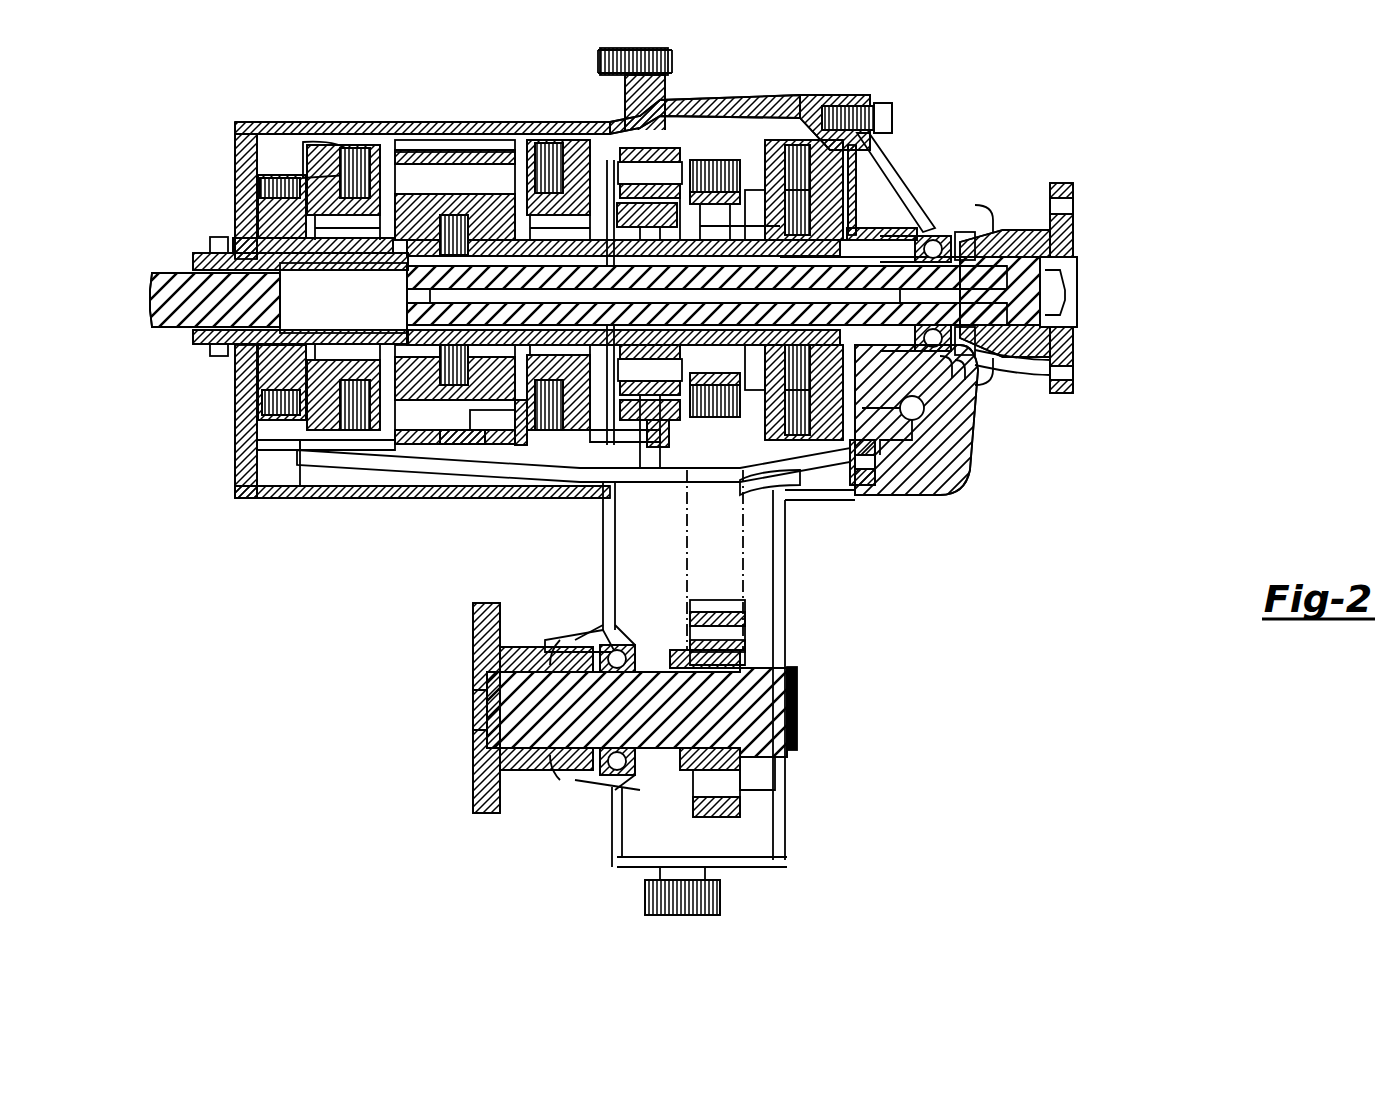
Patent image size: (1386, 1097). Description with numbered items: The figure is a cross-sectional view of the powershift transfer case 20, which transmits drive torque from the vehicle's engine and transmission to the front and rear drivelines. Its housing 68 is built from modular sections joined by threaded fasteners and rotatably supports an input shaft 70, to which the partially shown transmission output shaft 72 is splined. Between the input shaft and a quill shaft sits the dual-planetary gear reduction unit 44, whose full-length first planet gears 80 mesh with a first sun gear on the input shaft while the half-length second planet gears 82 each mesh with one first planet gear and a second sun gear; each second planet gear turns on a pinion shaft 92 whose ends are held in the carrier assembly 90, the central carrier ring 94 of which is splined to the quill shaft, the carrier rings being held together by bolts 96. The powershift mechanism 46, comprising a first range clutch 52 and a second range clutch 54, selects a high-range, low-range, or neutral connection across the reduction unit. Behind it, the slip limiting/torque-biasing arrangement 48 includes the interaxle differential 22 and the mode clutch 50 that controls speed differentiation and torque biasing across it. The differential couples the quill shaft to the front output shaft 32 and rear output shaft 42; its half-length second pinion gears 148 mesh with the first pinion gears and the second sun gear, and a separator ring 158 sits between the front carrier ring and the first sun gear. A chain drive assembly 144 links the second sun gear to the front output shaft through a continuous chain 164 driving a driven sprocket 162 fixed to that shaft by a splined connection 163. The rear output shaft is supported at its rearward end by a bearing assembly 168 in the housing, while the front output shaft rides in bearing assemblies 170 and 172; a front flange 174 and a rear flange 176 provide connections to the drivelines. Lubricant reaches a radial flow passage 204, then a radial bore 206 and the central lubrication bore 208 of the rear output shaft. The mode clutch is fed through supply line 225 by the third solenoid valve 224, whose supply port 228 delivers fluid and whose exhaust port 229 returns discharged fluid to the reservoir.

The transfer case 20 is at (920, 100).
The interaxle differential 22 is at (660, 150).
The front output shaft 32 is at (792, 680).
The rear output shaft 42 is at (1077, 225).
The dual-planetary gear reduction unit 44 is at (432, 142).
The powershift mechanism 46 is at (353, 148).
The slip limiting/torque-biasing arrangement 48 is at (715, 160).
The mode clutch 50 is at (860, 188).
The first range clutch 52 is at (310, 150).
The second range clutch 54 is at (566, 140).
The housing 68 is at (255, 477).
The input shaft 70 is at (210, 248).
The transmission output shaft 72 is at (172, 283).
The first planet gears 80 is at (482, 150).
The second planet gears 82 is at (480, 420).
The carrier assembly 90 is at (430, 456).
The pinion shaft 92 is at (500, 415).
The central carrier ring 94 is at (455, 432).
The bolts 96 is at (420, 447).
The chain drive assembly 144 is at (760, 160).
The second pinion gears 148 is at (657, 445).
The separator ring 158 is at (605, 430).
The driven sprocket 162 is at (740, 601).
The splined connection 163 is at (765, 615).
The continuous chain 164 is at (720, 545).
The bearing assembly 168 is at (955, 212).
The bearing assembly 170 is at (600, 783).
The bearing assembly 172 is at (785, 751).
The front flange 174 is at (477, 813).
The rear flange 176 is at (1075, 353).
The radial flow passage 204 is at (953, 370).
The radial bore 206 is at (977, 350).
The lubrication bore 208 is at (932, 224).
The third electronically-controlled solenoid valve 224 is at (875, 415).
The supply line 225 is at (893, 445).
The supply port 228 is at (945, 365).
The exhaust port 229 is at (877, 420).